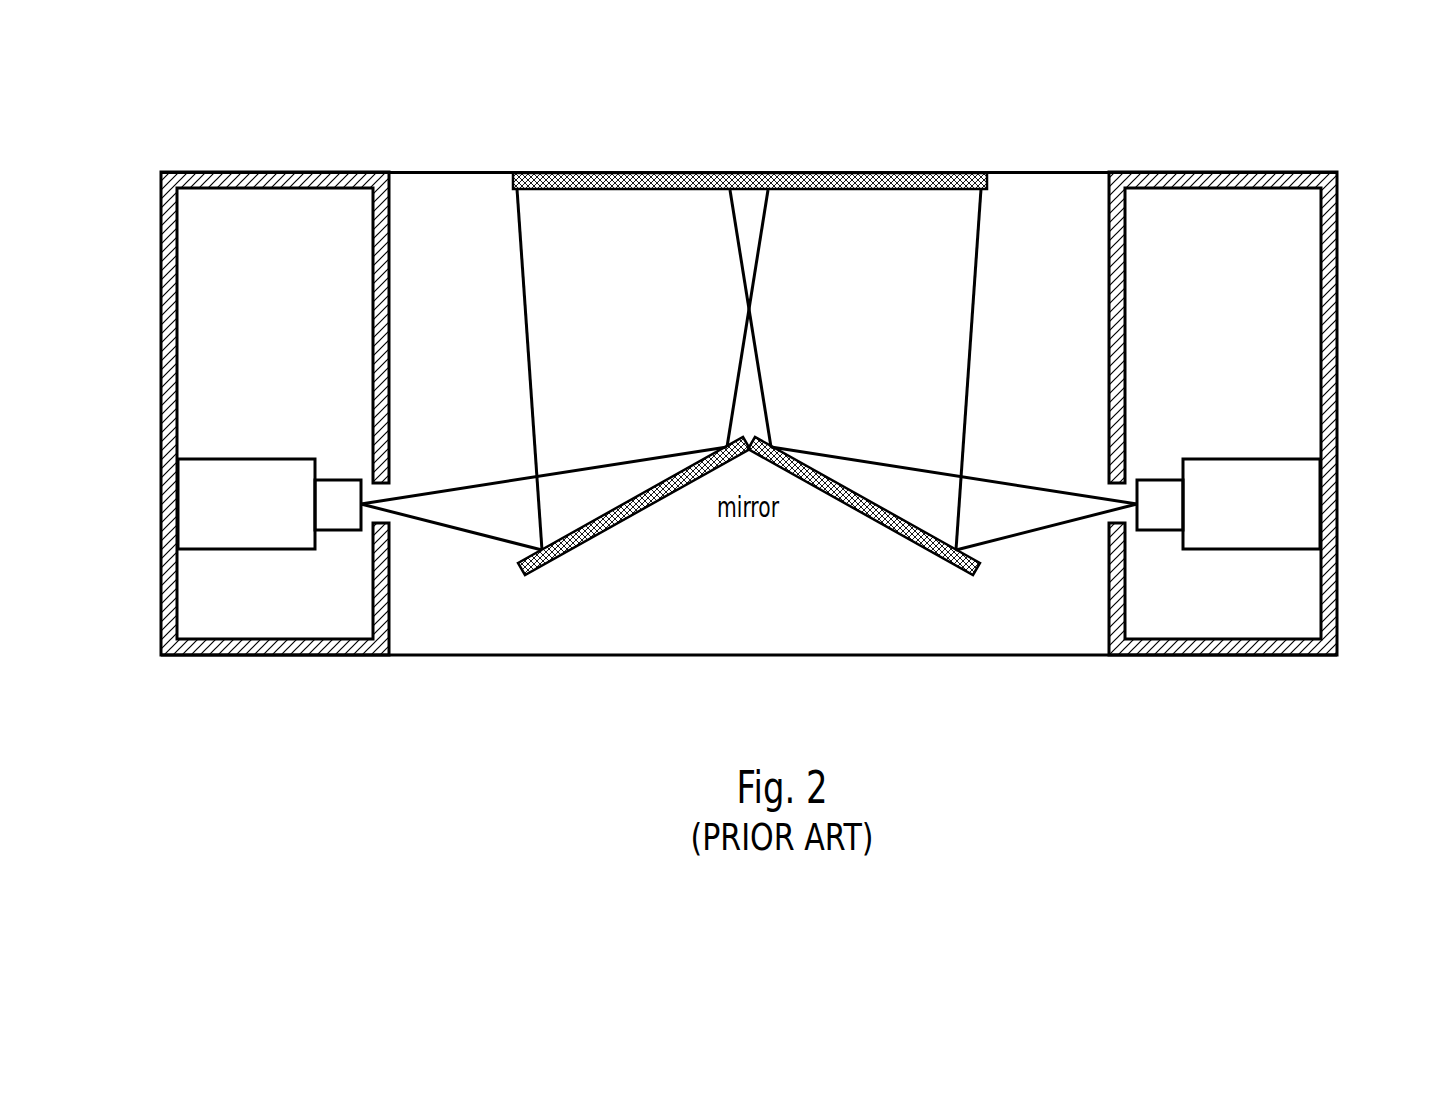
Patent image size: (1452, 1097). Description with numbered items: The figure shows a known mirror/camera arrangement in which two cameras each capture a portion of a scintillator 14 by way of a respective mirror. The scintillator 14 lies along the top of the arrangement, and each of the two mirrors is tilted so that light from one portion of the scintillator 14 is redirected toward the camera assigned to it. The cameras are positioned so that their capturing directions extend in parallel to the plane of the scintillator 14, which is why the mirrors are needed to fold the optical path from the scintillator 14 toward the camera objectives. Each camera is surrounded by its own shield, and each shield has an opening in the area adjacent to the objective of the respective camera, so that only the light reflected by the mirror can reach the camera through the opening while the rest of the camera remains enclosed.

The scintillator 14 is at (988, 182).